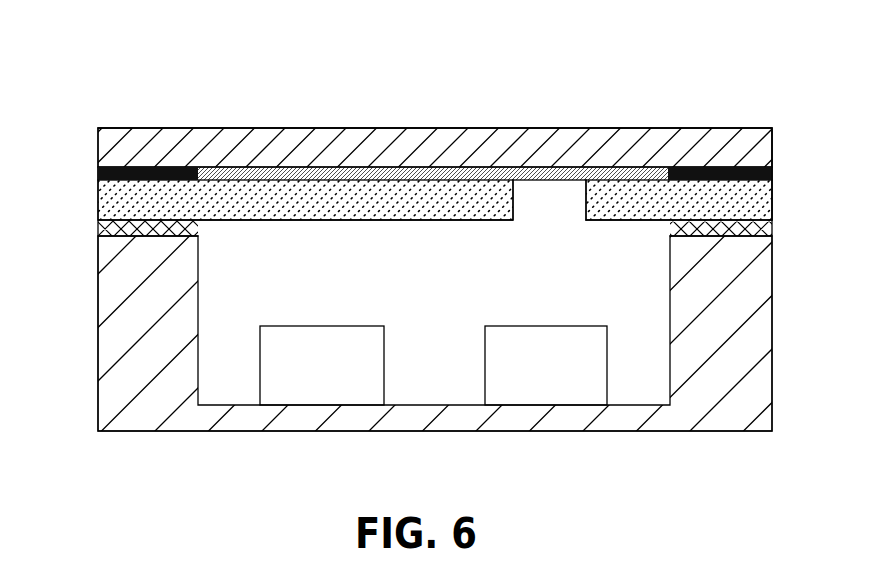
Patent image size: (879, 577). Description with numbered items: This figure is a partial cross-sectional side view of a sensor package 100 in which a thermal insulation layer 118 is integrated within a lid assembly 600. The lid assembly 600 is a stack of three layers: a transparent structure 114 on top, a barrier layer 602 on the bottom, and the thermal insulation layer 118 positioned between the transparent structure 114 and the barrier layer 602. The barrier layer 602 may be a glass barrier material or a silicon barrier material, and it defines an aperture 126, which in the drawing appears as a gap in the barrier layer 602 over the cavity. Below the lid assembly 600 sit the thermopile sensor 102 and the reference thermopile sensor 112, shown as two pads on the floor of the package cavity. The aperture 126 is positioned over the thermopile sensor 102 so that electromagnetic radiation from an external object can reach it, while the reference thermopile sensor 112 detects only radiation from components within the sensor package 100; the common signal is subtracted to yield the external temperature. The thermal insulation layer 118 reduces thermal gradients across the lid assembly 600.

The sensor package 100 is at (131, 75).
The thermopile sensor 102 is at (573, 392).
The reference thermopile sensor 112 is at (320, 392).
The transparent structure 114 is at (352, 138).
The thermal insulation layer 118 is at (410, 170).
The aperture 126 is at (552, 210).
The lid assembly 600 is at (91, 128).
The barrier layer 602 is at (133, 198).